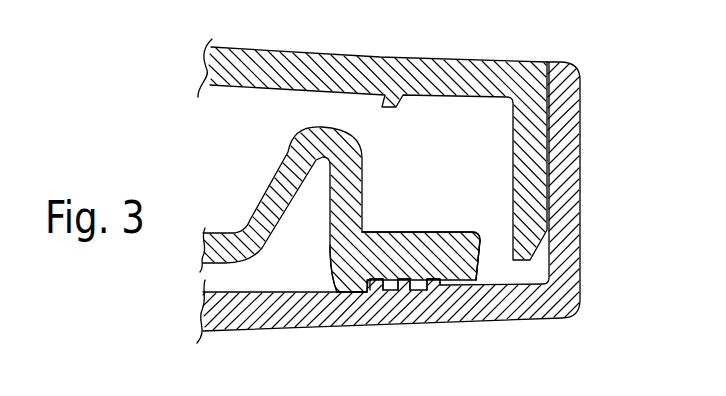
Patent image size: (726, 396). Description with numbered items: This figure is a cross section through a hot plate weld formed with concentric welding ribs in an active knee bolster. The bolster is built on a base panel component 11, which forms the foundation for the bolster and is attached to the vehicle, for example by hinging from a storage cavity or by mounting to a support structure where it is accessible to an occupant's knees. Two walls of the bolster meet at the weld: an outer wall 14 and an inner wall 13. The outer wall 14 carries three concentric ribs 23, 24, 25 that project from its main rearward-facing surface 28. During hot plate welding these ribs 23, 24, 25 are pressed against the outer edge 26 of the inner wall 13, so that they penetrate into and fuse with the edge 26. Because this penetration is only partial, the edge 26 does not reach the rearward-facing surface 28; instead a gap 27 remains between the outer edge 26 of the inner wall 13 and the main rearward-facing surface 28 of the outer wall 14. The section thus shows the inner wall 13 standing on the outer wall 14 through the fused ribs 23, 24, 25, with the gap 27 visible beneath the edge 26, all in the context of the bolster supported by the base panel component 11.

The base panel component 11 is at (317, 51).
The inner wall 13 is at (343, 209).
The outer wall 14 is at (417, 216).
The concentric rib 23 is at (381, 284).
The concentric rib 24 is at (408, 284).
The concentric rib 25 is at (438, 284).
The outer edge 26 is at (408, 248).
The gap 27 is at (334, 288).
The main rearward-facing surface 28 is at (474, 284).